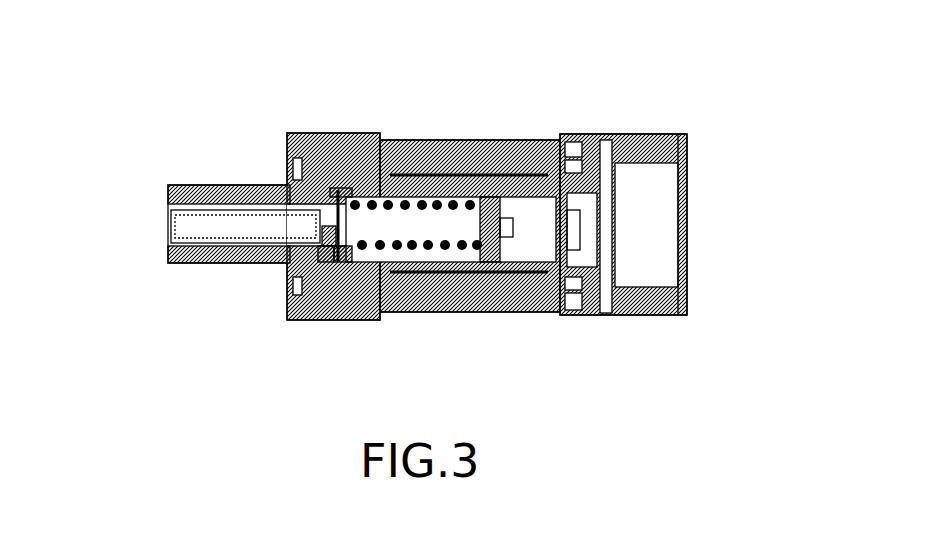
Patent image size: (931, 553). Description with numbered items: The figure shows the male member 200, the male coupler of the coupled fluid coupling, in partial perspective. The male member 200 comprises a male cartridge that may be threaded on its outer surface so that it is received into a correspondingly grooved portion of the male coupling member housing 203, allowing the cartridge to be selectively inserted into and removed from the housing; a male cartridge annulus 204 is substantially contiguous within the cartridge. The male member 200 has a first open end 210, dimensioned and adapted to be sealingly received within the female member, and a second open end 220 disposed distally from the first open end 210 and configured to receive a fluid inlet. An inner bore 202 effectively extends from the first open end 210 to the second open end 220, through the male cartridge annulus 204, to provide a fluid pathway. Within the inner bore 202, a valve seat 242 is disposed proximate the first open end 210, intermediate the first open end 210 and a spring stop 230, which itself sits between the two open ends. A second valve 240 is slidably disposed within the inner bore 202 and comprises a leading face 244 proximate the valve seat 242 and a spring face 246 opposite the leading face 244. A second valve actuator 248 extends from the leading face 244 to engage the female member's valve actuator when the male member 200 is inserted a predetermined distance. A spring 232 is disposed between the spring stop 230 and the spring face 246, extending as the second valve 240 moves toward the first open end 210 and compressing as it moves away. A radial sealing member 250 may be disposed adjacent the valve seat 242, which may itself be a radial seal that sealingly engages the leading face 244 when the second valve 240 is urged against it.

The male member 200 is at (145, 78).
The inner bore 202 is at (650, 220).
The male coupling member housing 203 is at (553, 135).
The male cartridge annulus 204 is at (612, 300).
The first open end 210 is at (178, 189).
The second open end 220 is at (692, 295).
The spring stop 230 is at (492, 198).
The spring 232 is at (432, 253).
The second valve 240 is at (322, 255).
The valve seat 242 is at (337, 190).
The leading face 244 is at (325, 235).
The spring face 246 is at (348, 257).
The second valve actuator 248 is at (187, 223).
The radial sealing member 250 is at (352, 182).